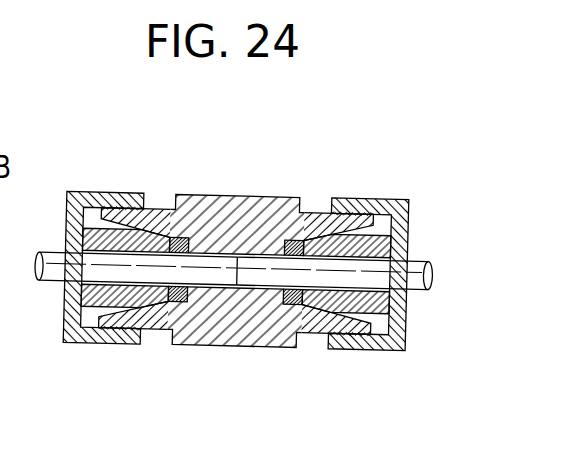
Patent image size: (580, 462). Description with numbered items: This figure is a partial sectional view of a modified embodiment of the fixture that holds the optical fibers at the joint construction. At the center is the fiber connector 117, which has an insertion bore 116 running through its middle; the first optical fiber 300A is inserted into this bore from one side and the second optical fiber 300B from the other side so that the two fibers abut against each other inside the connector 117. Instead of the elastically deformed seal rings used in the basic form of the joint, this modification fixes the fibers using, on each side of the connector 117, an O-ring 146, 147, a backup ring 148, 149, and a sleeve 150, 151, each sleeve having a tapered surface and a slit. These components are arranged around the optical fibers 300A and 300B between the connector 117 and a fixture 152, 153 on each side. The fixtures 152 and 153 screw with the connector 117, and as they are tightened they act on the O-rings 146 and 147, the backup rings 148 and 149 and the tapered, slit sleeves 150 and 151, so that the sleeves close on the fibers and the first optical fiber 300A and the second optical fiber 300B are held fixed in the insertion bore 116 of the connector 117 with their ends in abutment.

The insertion bore 116 is at (222, 256).
The fiber connector 117 is at (202, 194).
The O-ring 146 is at (182, 303).
The O-ring 147 is at (281, 303).
The backup ring 148 is at (152, 340).
The backup ring 149 is at (302, 302).
The sleeve 150 is at (82, 296).
The sleeve 151 is at (380, 298).
The fixture 152 is at (81, 348).
The fixture 153 is at (380, 352).
The first optical fiber 300A is at (48, 250).
The second optical fiber 300B is at (428, 260).